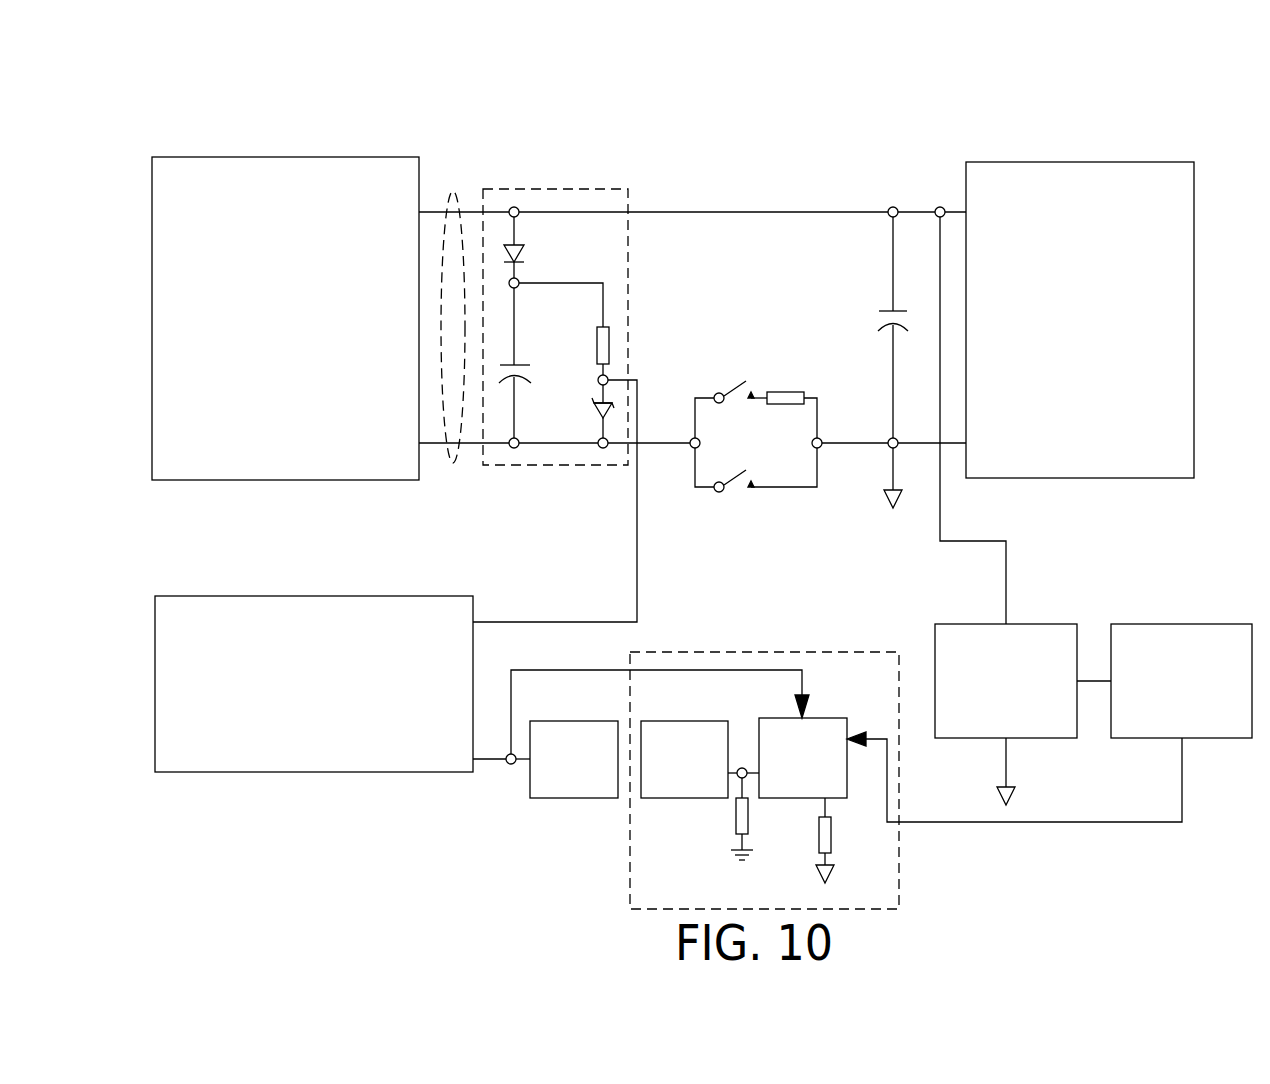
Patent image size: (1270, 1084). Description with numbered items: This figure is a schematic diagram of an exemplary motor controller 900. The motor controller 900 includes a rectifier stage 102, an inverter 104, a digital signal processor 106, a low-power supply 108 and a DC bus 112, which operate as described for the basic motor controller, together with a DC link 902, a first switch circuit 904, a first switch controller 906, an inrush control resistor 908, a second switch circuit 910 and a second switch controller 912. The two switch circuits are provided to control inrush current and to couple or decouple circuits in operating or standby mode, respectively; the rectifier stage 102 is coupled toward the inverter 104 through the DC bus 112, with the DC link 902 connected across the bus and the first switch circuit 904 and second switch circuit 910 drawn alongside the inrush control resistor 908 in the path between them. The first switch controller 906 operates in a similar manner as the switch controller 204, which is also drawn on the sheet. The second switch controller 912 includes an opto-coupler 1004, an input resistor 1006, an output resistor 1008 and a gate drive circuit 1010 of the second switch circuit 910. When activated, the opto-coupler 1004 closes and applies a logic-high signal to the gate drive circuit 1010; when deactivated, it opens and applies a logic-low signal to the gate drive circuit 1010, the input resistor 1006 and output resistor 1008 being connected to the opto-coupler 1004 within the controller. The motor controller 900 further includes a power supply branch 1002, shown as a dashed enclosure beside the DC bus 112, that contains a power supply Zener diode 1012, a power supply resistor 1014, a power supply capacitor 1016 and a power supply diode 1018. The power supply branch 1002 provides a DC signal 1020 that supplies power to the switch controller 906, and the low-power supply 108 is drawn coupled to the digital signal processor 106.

The rectifier stage 102 is at (311, 324).
The inverter 104 is at (1104, 329).
The digital signal processor (DSP) 106 is at (1203, 699).
The low-power supply 108 is at (1035, 702).
The DC bus 112 is at (451, 191).
The switch controller 204 is at (365, 703).
The motor controller 900 is at (1062, 131).
The DC link 902 is at (893, 311).
The first switch circuit 904 is at (746, 381).
The first switch controller 906 is at (598, 776).
The inrush control resistor 908 is at (784, 392).
The second switch circuit 910 is at (740, 474).
The second switch controller 912 is at (810, 652).
The power supply branch 1002 is at (602, 189).
The opto-coupler 1004 is at (832, 771).
The input resistor 1006 is at (819, 832).
The output resistor 1008 is at (736, 820).
The gate drive circuit 1010 is at (715, 774).
The power supply Zener diode 1012 is at (596, 402).
The power supply resistor 1014 is at (609, 347).
The power supply capacitor 1016 is at (506, 384).
The power supply diode 1018 is at (523, 252).
The DC signal 1020 is at (635, 562).